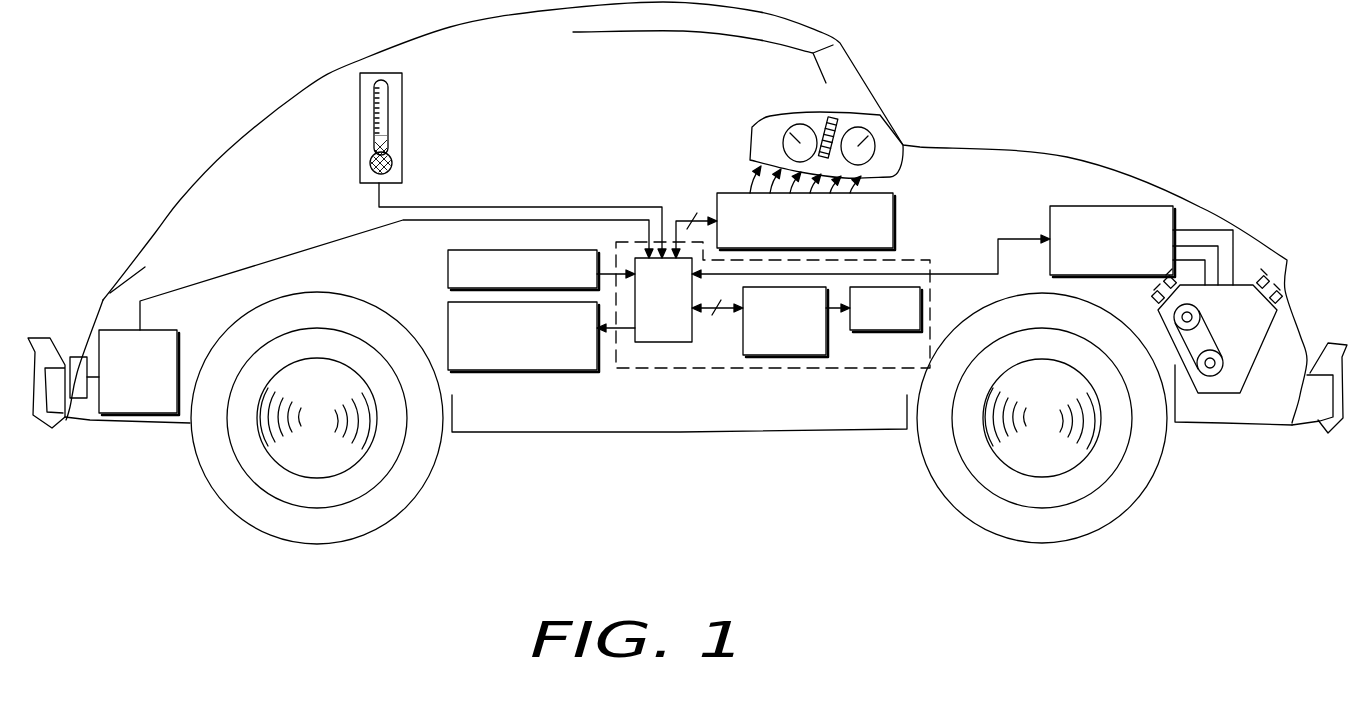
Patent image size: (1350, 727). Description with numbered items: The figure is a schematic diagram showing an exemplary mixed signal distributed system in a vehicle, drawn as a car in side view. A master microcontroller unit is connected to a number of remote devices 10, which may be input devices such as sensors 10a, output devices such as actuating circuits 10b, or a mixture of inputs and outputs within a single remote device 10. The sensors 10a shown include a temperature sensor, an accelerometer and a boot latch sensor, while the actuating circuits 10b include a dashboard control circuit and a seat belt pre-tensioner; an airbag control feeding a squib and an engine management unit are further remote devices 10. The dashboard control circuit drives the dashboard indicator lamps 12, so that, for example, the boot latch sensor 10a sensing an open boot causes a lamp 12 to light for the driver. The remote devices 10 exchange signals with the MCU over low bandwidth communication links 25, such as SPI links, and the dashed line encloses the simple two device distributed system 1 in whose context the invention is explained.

The two device distributed system 1 is at (665, 370).
The remote device 10 is at (760, 357).
The sensor 10a is at (360, 111).
The actuating circuit 10b is at (725, 193).
The dashboard indicator lamp 12 is at (829, 112).
The low bandwidth communication link 25 is at (707, 267).